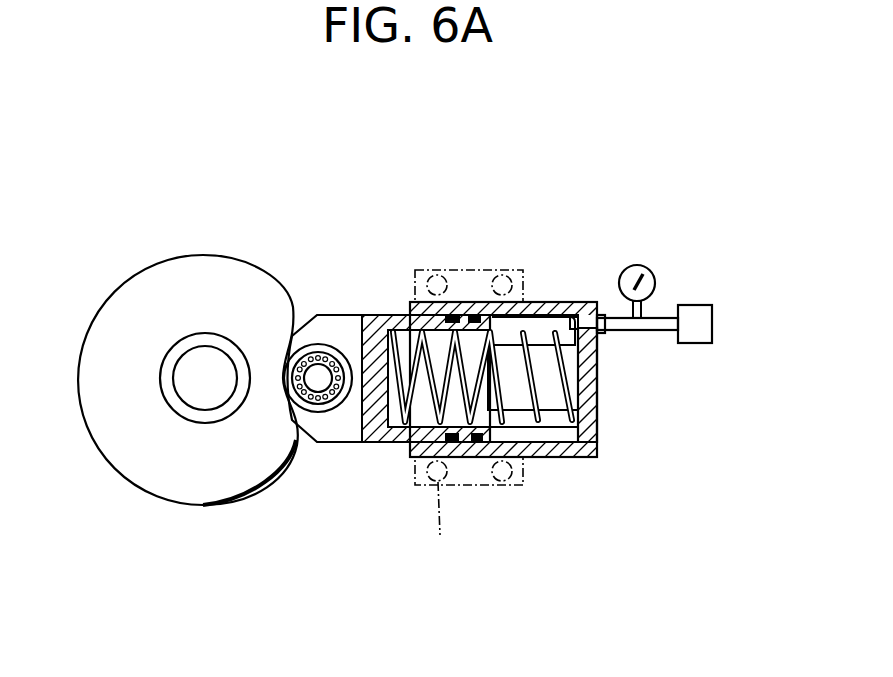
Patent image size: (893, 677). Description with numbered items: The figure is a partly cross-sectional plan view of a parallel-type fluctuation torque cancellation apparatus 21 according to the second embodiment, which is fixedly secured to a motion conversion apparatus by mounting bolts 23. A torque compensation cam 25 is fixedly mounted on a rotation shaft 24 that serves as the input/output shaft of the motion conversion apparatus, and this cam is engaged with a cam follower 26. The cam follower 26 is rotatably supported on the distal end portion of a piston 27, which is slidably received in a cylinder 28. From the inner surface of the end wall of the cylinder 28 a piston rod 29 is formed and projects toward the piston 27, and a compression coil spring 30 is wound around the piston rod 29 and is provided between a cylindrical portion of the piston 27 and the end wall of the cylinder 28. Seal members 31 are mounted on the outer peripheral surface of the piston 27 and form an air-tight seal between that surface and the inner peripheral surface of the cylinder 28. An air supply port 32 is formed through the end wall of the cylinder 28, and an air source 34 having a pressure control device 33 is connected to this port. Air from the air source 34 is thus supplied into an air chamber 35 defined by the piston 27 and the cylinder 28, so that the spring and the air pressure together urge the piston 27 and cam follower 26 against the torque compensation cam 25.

The fluctuation torque cancellation apparatus 21 is at (488, 156).
The mounting bolts 23 is at (438, 480).
The rotation shaft 24 is at (190, 363).
The torque compensation cam 25 is at (143, 462).
The cam follower 26 is at (319, 412).
The piston 27 is at (373, 327).
The cylinder 28 is at (557, 312).
The piston rod 29 is at (533, 432).
The compression coil spring 30 is at (513, 400).
The seal members 31 is at (478, 315).
The air supply port 32 is at (583, 312).
The pressure control device 33 is at (655, 282).
The air source 34 is at (697, 343).
The air chamber 35 is at (563, 430).